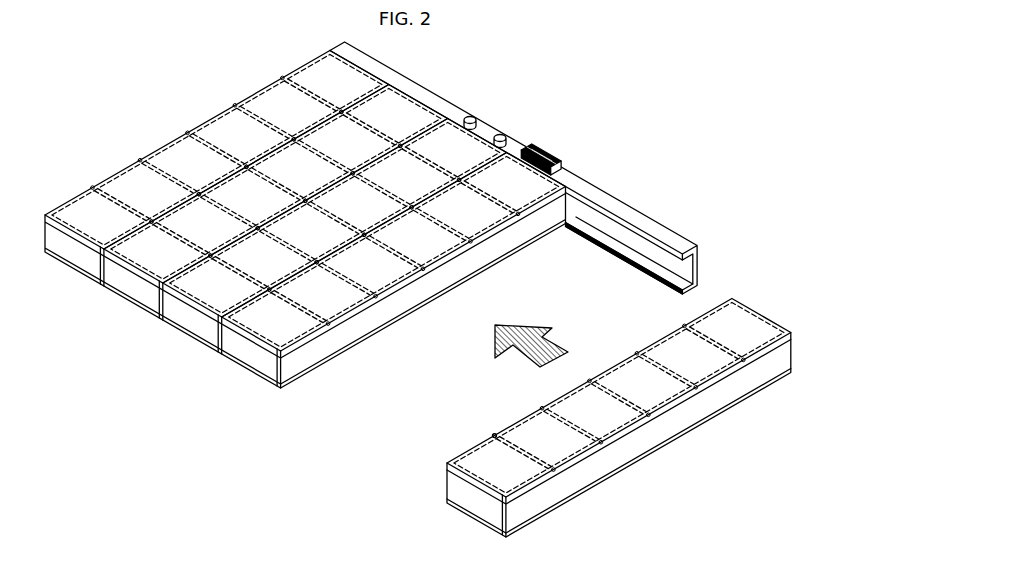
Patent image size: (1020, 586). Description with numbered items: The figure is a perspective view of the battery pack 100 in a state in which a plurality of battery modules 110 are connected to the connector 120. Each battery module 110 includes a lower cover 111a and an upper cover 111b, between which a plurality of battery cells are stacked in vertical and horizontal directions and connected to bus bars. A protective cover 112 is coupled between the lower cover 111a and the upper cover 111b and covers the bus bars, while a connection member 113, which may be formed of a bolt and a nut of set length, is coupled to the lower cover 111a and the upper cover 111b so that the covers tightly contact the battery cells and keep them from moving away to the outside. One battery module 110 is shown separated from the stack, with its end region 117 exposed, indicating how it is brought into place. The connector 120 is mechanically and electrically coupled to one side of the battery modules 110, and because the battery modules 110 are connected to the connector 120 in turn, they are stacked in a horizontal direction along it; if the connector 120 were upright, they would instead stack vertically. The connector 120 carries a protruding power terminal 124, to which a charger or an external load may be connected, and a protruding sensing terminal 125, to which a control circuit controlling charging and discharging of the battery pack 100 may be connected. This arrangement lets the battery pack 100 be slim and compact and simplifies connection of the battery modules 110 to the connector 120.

The battery pack 100 is at (122, 74).
The battery module 110 is at (592, 429).
The lower cover 111a is at (450, 508).
The upper cover 111b is at (467, 457).
The protective cover 112 is at (519, 514).
The connection member 113 is at (496, 434).
The end plate 117 is at (489, 514).
The connector 120 is at (645, 212).
The power terminal 124 is at (503, 132).
The sensing terminal 125 is at (545, 152).